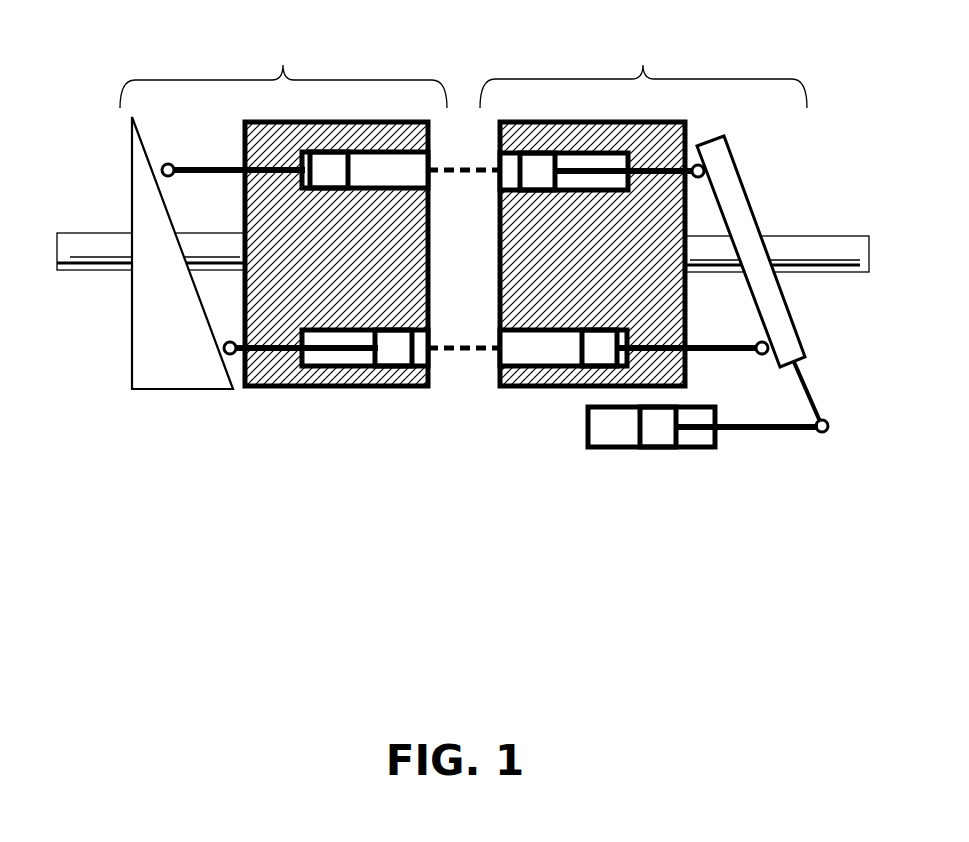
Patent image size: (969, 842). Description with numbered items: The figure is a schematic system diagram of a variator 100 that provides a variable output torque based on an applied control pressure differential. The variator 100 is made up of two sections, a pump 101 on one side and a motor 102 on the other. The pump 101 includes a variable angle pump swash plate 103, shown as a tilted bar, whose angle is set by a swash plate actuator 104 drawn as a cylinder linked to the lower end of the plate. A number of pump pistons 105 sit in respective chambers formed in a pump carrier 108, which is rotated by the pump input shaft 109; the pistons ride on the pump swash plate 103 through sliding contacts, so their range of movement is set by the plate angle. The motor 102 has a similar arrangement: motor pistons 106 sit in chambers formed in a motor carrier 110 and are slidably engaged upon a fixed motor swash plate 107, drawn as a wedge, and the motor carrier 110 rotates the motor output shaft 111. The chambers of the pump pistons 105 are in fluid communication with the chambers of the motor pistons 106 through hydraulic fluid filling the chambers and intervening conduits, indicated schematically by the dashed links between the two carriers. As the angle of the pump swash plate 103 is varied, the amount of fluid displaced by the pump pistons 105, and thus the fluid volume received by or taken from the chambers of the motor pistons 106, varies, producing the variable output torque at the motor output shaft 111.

The variator 100 is at (549, 588).
The pump 101 is at (643, 63).
The motor 102 is at (283, 63).
The pump swash plate 103 is at (775, 308).
The swash plate actuator 104 is at (668, 455).
The pump pistons 105 is at (600, 338).
The motor pistons 106 is at (393, 335).
The motor swash plate 107 is at (190, 378).
The pump carrier 108 is at (530, 388).
The pump input shaft 109 is at (838, 252).
The motor carrier 110 is at (385, 388).
The motor output shaft 111 is at (72, 245).